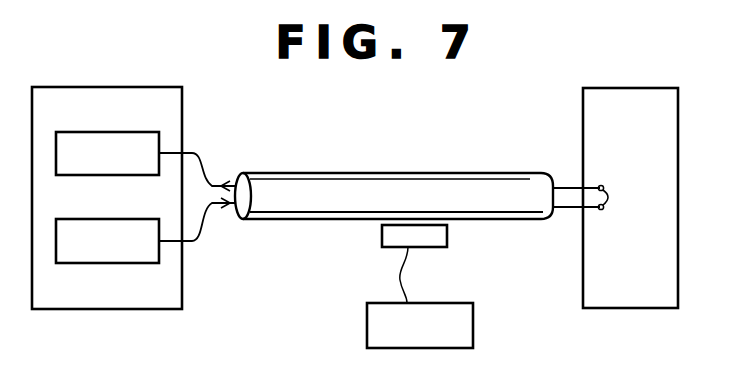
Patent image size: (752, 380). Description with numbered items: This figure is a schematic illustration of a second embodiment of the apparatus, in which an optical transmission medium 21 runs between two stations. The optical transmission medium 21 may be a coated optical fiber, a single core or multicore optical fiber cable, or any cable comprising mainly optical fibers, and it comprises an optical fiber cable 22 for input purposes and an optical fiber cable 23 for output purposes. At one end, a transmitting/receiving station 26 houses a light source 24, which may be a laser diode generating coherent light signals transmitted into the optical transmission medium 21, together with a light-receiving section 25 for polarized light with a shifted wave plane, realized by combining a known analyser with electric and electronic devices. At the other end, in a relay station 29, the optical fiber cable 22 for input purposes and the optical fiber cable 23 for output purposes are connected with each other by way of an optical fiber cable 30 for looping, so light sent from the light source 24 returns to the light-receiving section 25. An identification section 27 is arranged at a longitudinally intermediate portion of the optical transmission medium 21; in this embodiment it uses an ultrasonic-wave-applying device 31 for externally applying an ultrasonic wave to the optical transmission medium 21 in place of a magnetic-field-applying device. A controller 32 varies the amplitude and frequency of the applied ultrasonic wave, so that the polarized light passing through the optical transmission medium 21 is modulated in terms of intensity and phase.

The optical transmission medium 21 is at (285, 173).
The optical fiber cable for input purposes 22 is at (567, 213).
The optical fiber cable for output purposes 23 is at (567, 186).
The light source 24 is at (102, 263).
The light-receiving section 25 is at (92, 132).
The transmitting/receiving station 26 is at (93, 87).
The identification section 27 is at (382, 173).
The relay station 29 is at (622, 88).
The optical fiber cable for looping 30 is at (611, 197).
The ultrasonic-wave-applying device 31 is at (447, 235).
The controller 32 is at (468, 323).